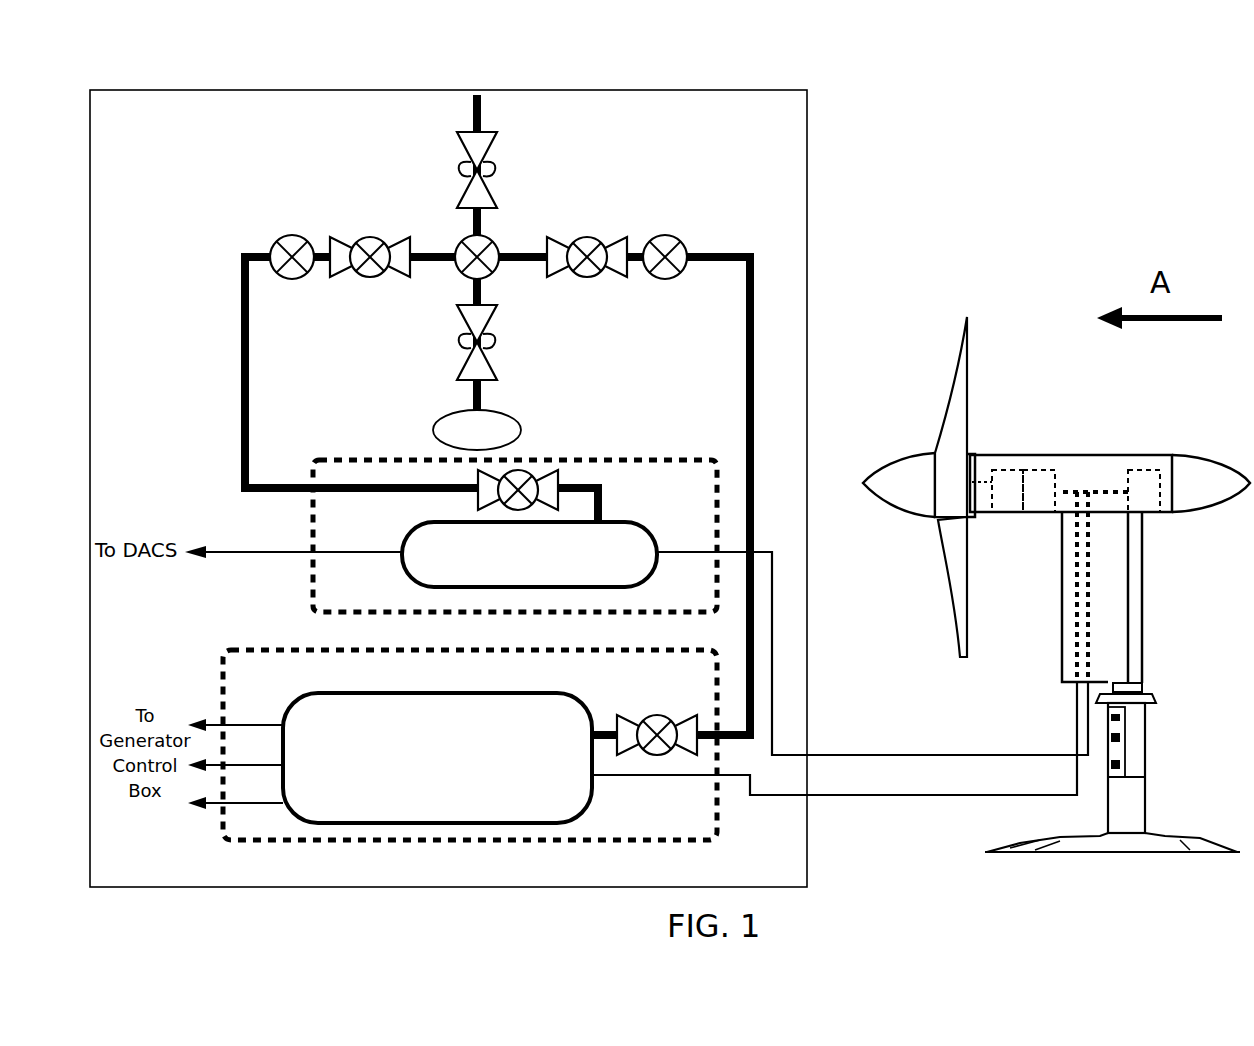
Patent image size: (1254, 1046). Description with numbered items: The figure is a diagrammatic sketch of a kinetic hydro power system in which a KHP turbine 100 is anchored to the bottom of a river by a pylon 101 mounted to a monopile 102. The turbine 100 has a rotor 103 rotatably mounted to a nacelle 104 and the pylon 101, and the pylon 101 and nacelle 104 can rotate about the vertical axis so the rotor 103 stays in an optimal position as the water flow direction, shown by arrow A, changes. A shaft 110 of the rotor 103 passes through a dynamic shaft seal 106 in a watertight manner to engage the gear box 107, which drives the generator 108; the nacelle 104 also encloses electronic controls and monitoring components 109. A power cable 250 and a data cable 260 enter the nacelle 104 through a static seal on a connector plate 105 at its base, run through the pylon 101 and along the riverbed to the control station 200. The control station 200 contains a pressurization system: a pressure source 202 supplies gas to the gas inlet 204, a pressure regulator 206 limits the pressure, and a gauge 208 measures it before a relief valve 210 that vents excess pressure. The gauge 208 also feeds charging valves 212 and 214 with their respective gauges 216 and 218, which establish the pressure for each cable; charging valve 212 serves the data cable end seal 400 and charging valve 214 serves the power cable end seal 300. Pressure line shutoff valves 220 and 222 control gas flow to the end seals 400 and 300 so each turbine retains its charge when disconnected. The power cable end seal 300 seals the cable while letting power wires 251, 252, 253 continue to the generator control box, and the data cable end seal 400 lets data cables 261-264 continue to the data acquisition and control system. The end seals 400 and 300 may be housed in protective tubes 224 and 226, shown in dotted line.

The KHP turbine 100 is at (1086, 235).
The pylon 101 is at (1143, 663).
The monopile 102 is at (1148, 805).
The rotor 103 is at (955, 387).
The nacelle 104 is at (1150, 453).
The connector plate 105 is at (1095, 513).
The dynamic shaft seal 106 is at (968, 455).
The gear box 107 is at (1013, 490).
The generator 108 is at (1045, 500).
The electronic controls and monitoring components 109 is at (1157, 500).
The shaft 110 is at (978, 484).
The control station 200 is at (234, 162).
The pressure source 202 is at (501, 444).
The gas inlet 204 is at (469, 410).
The pressure regulator 206 is at (500, 343).
The gauge 208 is at (495, 240).
The relief valve 210 is at (457, 170).
The charging valve 212 is at (373, 277).
The charging valve 214 is at (593, 280).
The gauge 216 is at (293, 277).
The gauge 218 is at (672, 282).
The pressure line shutoff valve 220 is at (530, 480).
The pressure line shutoff valve 222 is at (650, 715).
The tube 224 is at (347, 458).
The tube 226 is at (230, 648).
The power cable 250 is at (912, 798).
The power wire 251 is at (235, 712).
The power wire 252 is at (235, 752).
The power wire 253 is at (235, 791).
The data cable 260 is at (922, 753).
The data cables 261-264 is at (293, 540).
The power cable end seal 300 is at (461, 763).
The data cable end seal 400 is at (544, 568).